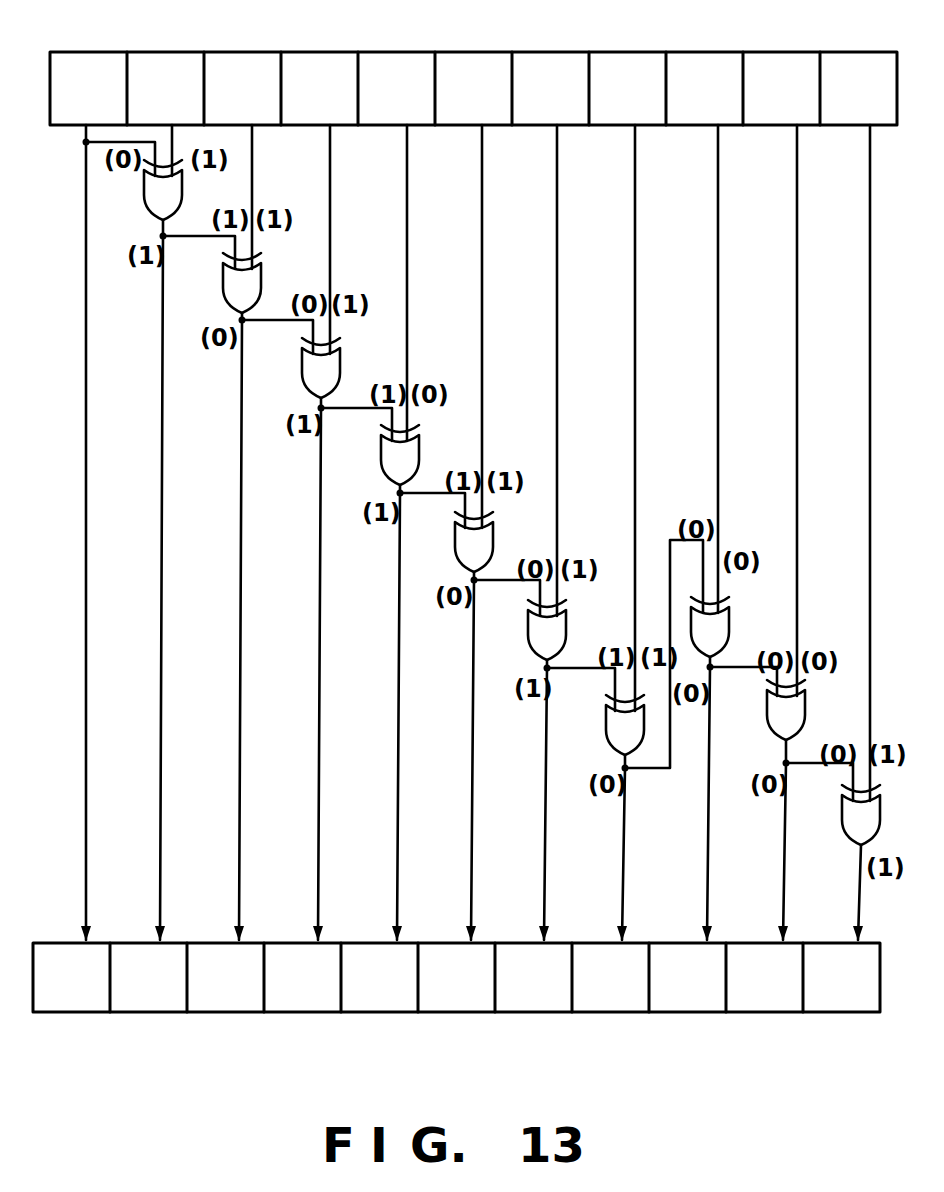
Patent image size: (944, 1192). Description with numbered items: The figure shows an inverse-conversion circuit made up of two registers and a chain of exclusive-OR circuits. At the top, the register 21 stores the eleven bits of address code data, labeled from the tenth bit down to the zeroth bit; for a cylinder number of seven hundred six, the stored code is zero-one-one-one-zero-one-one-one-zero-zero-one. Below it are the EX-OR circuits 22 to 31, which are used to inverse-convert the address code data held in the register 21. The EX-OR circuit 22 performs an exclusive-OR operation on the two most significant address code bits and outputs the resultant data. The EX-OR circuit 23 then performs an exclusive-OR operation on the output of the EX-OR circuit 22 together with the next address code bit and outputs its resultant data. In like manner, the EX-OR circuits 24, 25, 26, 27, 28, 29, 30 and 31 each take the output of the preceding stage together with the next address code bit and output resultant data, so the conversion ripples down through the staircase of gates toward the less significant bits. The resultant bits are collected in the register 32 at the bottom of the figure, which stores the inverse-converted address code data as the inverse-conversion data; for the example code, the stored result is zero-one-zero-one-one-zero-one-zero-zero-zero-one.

The register 21 is at (73, 56).
The EX-OR circuit 22 is at (150, 202).
The EX-OR circuit 23 is at (228, 286).
The EX-OR circuit 24 is at (306, 390).
The EX-OR circuit 25 is at (386, 476).
The EX-OR circuit 26 is at (460, 546).
The EX-OR circuit 27 is at (532, 646).
The EX-OR circuit 28 is at (610, 730).
The EX-OR circuit 29 is at (724, 628).
The EX-OR circuit 30 is at (772, 730).
The EX-OR circuit 31 is at (846, 826).
The register 32 is at (45, 1013).